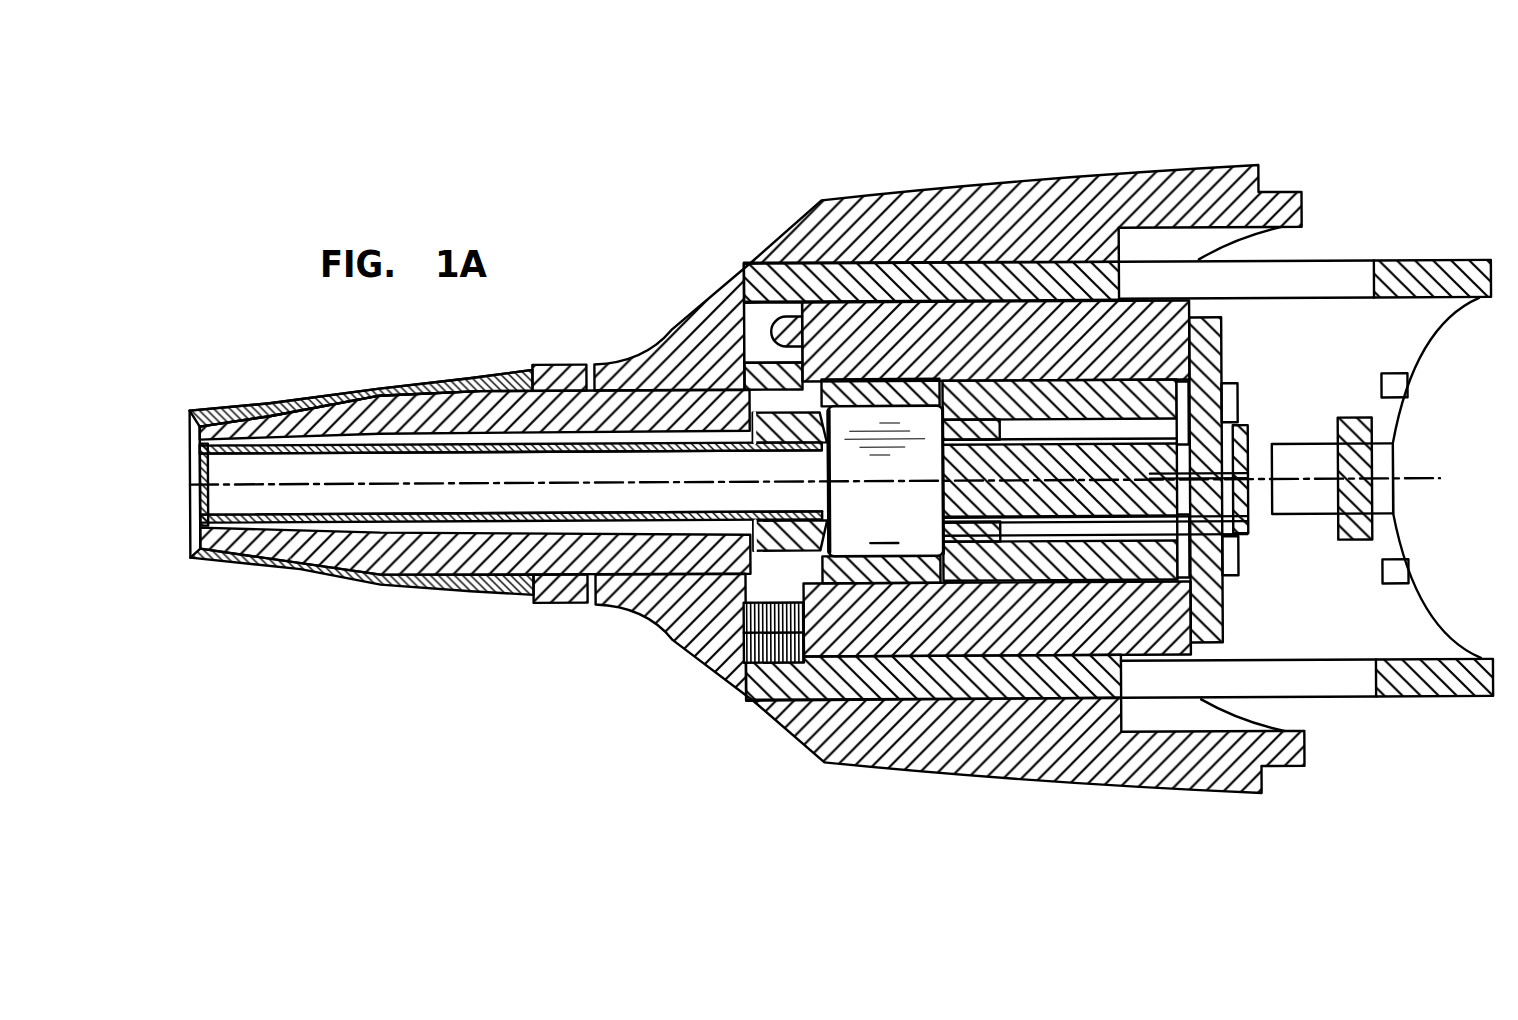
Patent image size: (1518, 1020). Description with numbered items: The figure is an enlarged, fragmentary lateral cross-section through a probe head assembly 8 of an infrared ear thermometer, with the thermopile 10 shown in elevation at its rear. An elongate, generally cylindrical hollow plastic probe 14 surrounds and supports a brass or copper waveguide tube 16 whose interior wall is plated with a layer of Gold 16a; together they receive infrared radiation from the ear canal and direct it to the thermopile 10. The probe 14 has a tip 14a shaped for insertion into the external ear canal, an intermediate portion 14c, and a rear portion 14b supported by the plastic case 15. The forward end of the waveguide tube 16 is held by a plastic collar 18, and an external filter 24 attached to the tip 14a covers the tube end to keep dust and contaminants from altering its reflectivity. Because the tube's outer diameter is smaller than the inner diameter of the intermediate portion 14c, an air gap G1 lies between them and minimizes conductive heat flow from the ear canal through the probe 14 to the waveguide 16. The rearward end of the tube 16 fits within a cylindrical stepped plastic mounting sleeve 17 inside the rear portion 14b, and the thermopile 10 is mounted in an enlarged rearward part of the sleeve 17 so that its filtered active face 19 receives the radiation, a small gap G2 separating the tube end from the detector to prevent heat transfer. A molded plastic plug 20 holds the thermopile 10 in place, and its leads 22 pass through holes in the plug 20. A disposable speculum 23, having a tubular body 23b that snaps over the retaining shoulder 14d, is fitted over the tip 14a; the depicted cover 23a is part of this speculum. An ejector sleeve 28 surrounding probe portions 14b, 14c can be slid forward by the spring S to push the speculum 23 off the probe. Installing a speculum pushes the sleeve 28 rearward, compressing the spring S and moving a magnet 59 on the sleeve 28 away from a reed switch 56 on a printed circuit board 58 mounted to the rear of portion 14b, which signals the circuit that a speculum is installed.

The probe head assembly 8 is at (585, 150).
The thermopile 10 is at (884, 533).
The probe 14 is at (695, 578).
The tip 14a is at (245, 545).
The rear portion 14b is at (1000, 641).
The intermediate portion 14c is at (528, 588).
The retaining shoulder 14d is at (341, 565).
The case 15 is at (1000, 186).
The waveguide tube 16 is at (318, 524).
The layer of Gold 16a is at (436, 458).
The mounting sleeve 17 is at (832, 566).
The collar 18 is at (258, 425).
The active face 19 is at (828, 492).
The plug 20 is at (1172, 346).
The leads 22 is at (1240, 446).
The speculum 23 is at (310, 349).
The cap front wall 23a is at (193, 497).
The tubular body 23b is at (378, 384).
The external filter 24 is at (202, 470).
The ejector sleeve 28 is at (667, 340).
The reed switch 56 is at (1250, 528).
The printed circuit board 58 is at (1225, 621).
The magnet 59 is at (1373, 445).
The air gap G1 is at (323, 440).
The gap G2 is at (690, 600).
The spring S is at (742, 641).